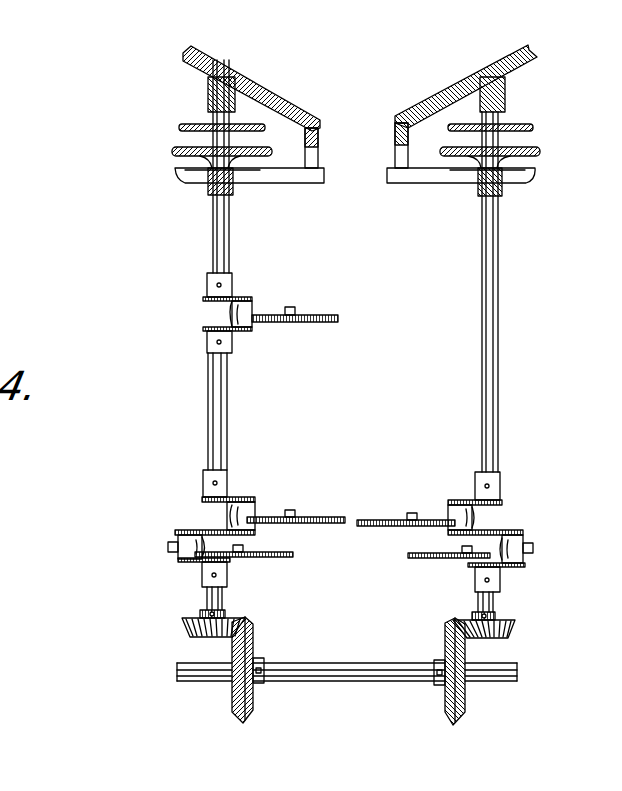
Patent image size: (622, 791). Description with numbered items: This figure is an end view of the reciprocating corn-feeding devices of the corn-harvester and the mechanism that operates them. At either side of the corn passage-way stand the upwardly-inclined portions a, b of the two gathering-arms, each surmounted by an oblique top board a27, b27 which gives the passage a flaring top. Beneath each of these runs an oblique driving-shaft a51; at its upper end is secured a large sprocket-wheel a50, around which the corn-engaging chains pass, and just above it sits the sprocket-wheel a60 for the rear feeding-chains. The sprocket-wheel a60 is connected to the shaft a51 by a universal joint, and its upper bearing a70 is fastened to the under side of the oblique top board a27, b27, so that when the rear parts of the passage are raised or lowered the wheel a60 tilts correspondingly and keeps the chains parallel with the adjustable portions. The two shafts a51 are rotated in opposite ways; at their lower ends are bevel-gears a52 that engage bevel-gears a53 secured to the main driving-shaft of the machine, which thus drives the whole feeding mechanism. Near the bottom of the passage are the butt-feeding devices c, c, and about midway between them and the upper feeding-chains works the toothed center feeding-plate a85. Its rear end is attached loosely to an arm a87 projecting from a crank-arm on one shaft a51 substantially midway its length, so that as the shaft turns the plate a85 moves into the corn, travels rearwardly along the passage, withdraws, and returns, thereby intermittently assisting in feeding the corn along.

The oblique top board a27 is at (228, 60).
The oblique top board b27 is at (413, 118).
The upper bearing a70 is at (210, 103).
The sprocket-wheel a60 is at (180, 127).
The large sprocket-wheel a50 is at (172, 151).
The upwardly-inclined portion of gathering-arm a is at (256, 177).
The upwardly-inclined portion of gathering-arm b is at (461, 180).
The oblique driving-shaft a51 is at (232, 231).
The arm a87 is at (255, 306).
The toothed feeding-plate a85 is at (320, 315).
The butt-feeding devices c is at (364, 517).
The bevel-gear a52 is at (235, 620).
The bevel-gear a53 is at (255, 632).